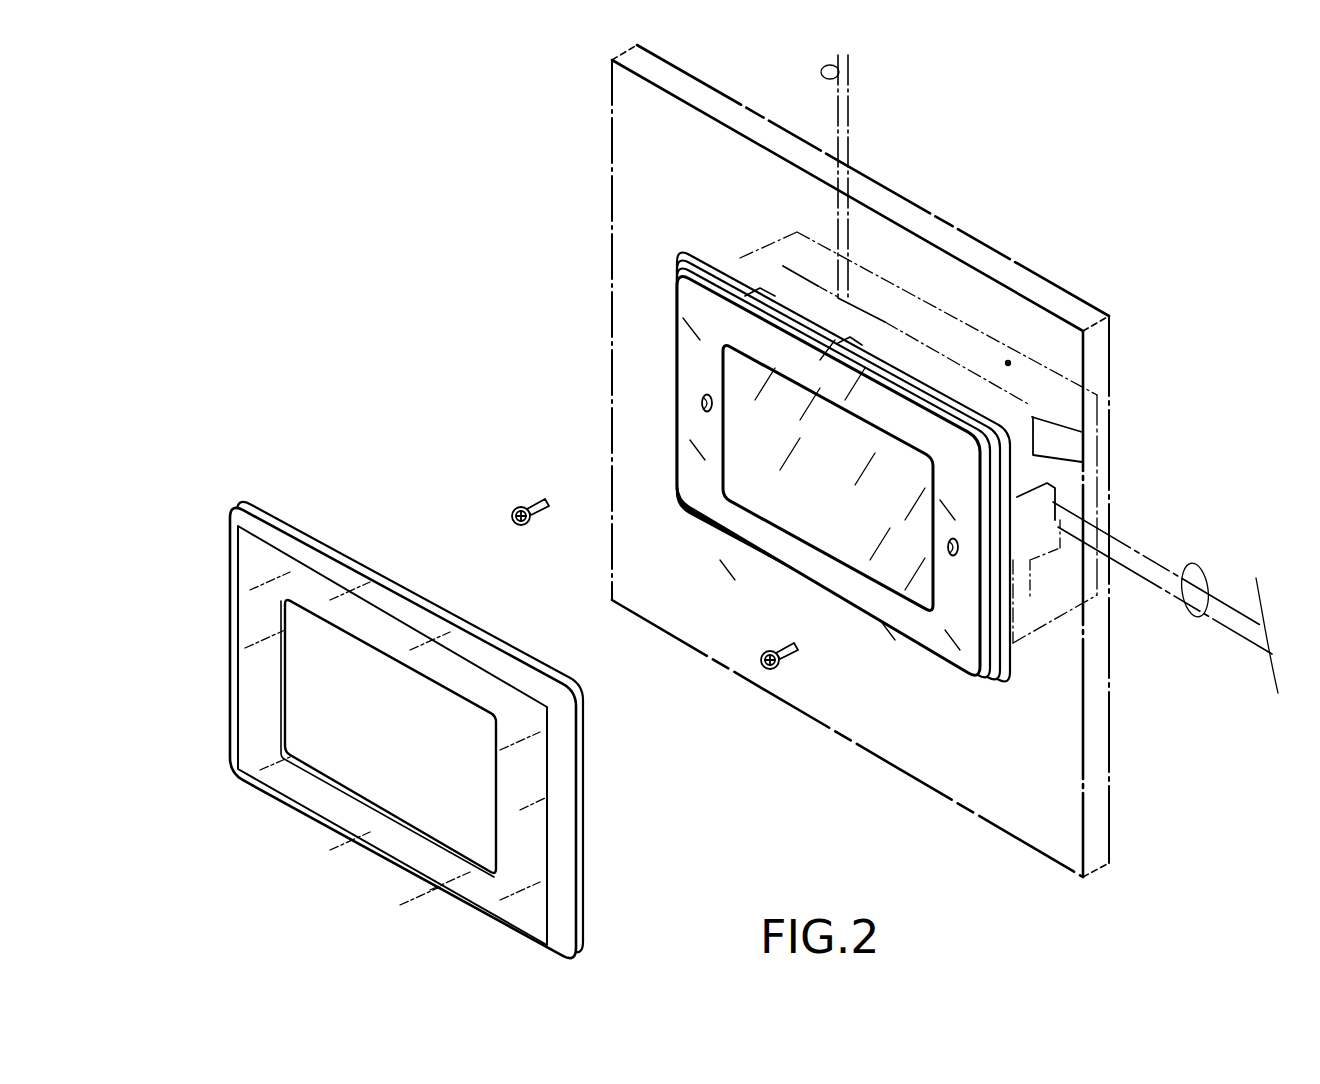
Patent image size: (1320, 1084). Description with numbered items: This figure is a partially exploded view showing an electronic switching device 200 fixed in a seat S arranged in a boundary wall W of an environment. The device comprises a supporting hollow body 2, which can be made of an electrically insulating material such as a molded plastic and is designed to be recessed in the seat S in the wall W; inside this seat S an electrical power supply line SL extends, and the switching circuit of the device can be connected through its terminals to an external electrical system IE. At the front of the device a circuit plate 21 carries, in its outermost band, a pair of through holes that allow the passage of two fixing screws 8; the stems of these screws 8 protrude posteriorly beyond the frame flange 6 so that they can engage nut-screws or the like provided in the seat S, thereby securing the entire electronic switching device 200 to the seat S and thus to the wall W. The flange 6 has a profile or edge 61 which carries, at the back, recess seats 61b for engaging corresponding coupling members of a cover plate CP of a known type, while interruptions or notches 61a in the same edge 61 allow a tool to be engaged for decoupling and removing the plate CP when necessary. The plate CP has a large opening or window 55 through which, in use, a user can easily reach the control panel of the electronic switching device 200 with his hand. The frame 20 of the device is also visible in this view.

The boundary wall W is at (652, 162).
The supporting hollow body 2 is at (1053, 356).
The seat S is at (1009, 362).
The external electrical system IE is at (839, 72).
The electronic switching device 200 is at (657, 232).
The mounting frame 20 is at (842, 445).
The circuit plate 21 is at (953, 645).
The frame flange 6 is at (1014, 671).
The edge of the flange 61 is at (712, 255).
The notches 61a is at (850, 305).
The recess seats 61b is at (763, 296).
The cover plate CP is at (355, 730).
The window 55 is at (350, 792).
The fixing screws 8 is at (512, 516).
The electrical power supply line SL is at (1192, 562).